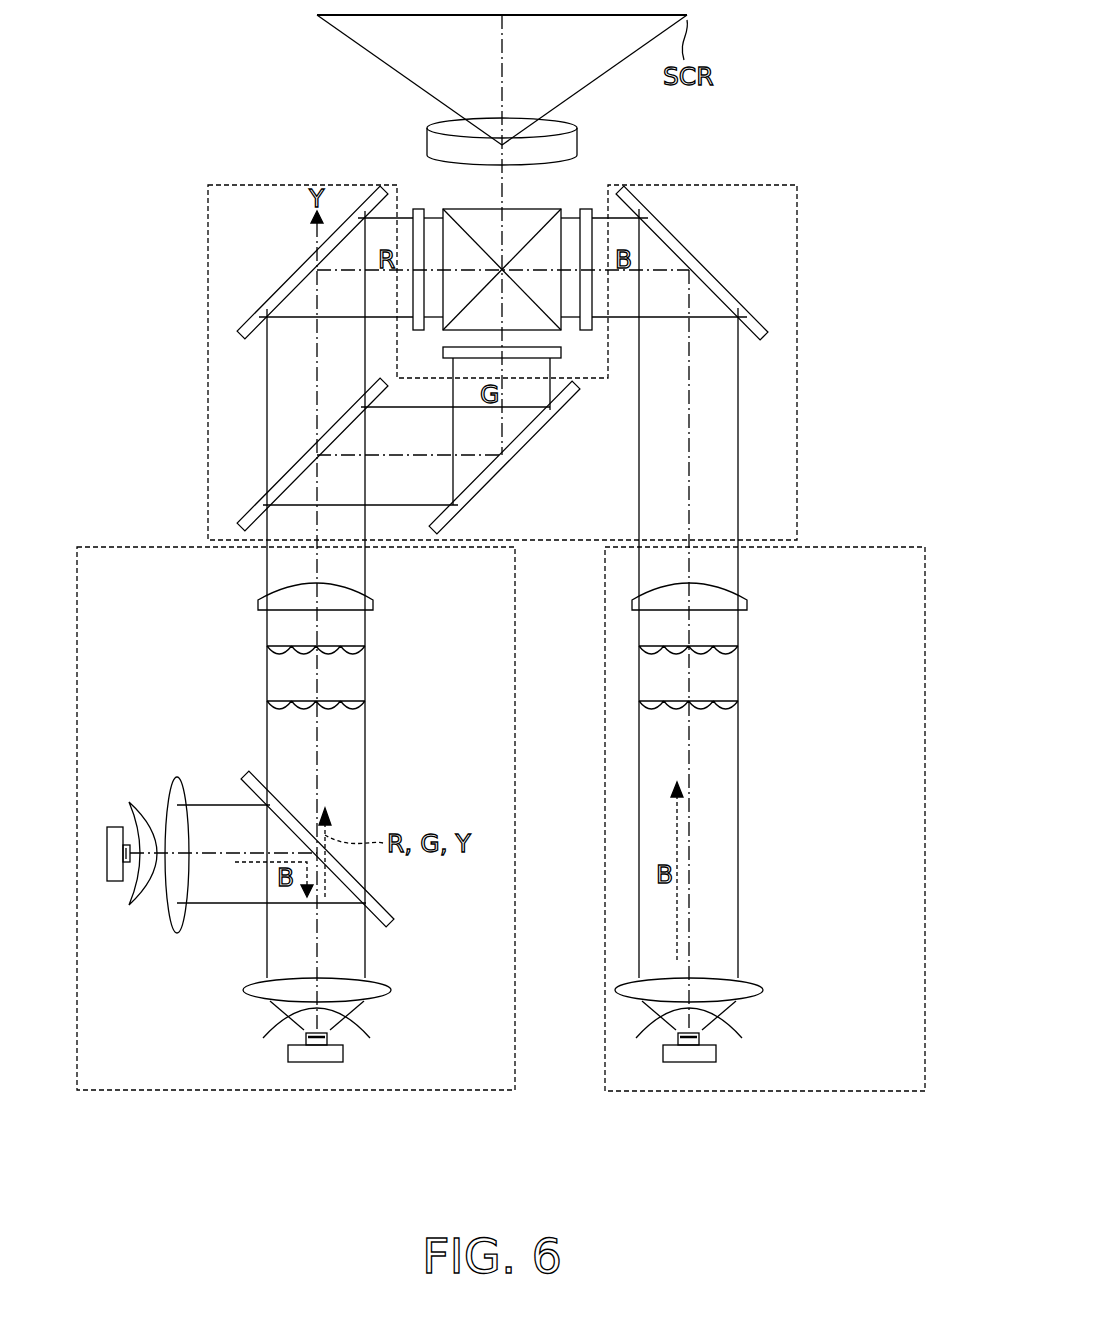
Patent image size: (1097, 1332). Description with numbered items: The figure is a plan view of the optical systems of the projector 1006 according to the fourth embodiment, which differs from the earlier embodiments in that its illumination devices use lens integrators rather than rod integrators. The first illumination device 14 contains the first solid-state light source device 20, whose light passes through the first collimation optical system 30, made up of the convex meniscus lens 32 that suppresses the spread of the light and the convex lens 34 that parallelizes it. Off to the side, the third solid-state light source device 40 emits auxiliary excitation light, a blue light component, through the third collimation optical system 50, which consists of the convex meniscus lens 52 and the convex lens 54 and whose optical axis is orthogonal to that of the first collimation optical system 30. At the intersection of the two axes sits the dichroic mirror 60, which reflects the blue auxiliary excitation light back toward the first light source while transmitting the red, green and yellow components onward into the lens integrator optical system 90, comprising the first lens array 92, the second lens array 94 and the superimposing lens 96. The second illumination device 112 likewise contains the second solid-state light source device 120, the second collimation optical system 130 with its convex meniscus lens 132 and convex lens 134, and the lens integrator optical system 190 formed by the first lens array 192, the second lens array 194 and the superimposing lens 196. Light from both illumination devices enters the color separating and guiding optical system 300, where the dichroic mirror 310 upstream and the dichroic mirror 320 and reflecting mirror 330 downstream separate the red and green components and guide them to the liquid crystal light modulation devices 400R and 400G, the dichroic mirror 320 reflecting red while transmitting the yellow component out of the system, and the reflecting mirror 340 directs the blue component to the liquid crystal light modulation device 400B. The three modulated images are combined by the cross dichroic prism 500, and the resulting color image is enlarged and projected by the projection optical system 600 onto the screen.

The projector 1006 is at (882, 33).
The projection optical system 600 is at (428, 145).
The cross dichroic prism 500 is at (525, 206).
The liquid crystal light modulation device 400R is at (418, 208).
The liquid crystal light modulation device 400G is at (562, 353).
The liquid crystal light modulation device 400B is at (585, 208).
The color separating and guiding optical system 300 is at (208, 368).
The dichroic mirror 310 is at (247, 512).
The dichroic mirror 320 is at (246, 325).
The reflecting mirror 330 is at (484, 498).
The reflecting mirror 340 is at (758, 322).
The first illumination device 14 is at (195, 1091).
The second illumination device 112 is at (733, 1091).
The lens integrator optical system 90 is at (242, 649).
The first lens array 92 is at (267, 703).
The second lens array 94 is at (267, 646).
The superimposing lens 96 is at (258, 607).
The lens integrator optical system 190 is at (771, 649).
The first lens array 192 is at (743, 703).
The second lens array 194 is at (738, 646).
The superimposing lens 196 is at (747, 607).
The dichroic mirror 60 is at (392, 915).
The third solid-state light source device 40 is at (119, 900).
The third collimation optical system 50 is at (177, 899).
The convex meniscus lens 52 is at (142, 905).
The convex lens 54 is at (148, 978).
The first solid-state light source device 20 is at (266, 1048).
The first collimation optical system 30 is at (380, 1002).
The convex meniscus lens 32 is at (360, 1020).
The convex lens 34 is at (390, 990).
The second solid-state light source device 120 is at (738, 1042).
The second collimation optical system 130 is at (762, 984).
The convex meniscus lens 132 is at (742, 1020).
The convex lens 134 is at (757, 983).